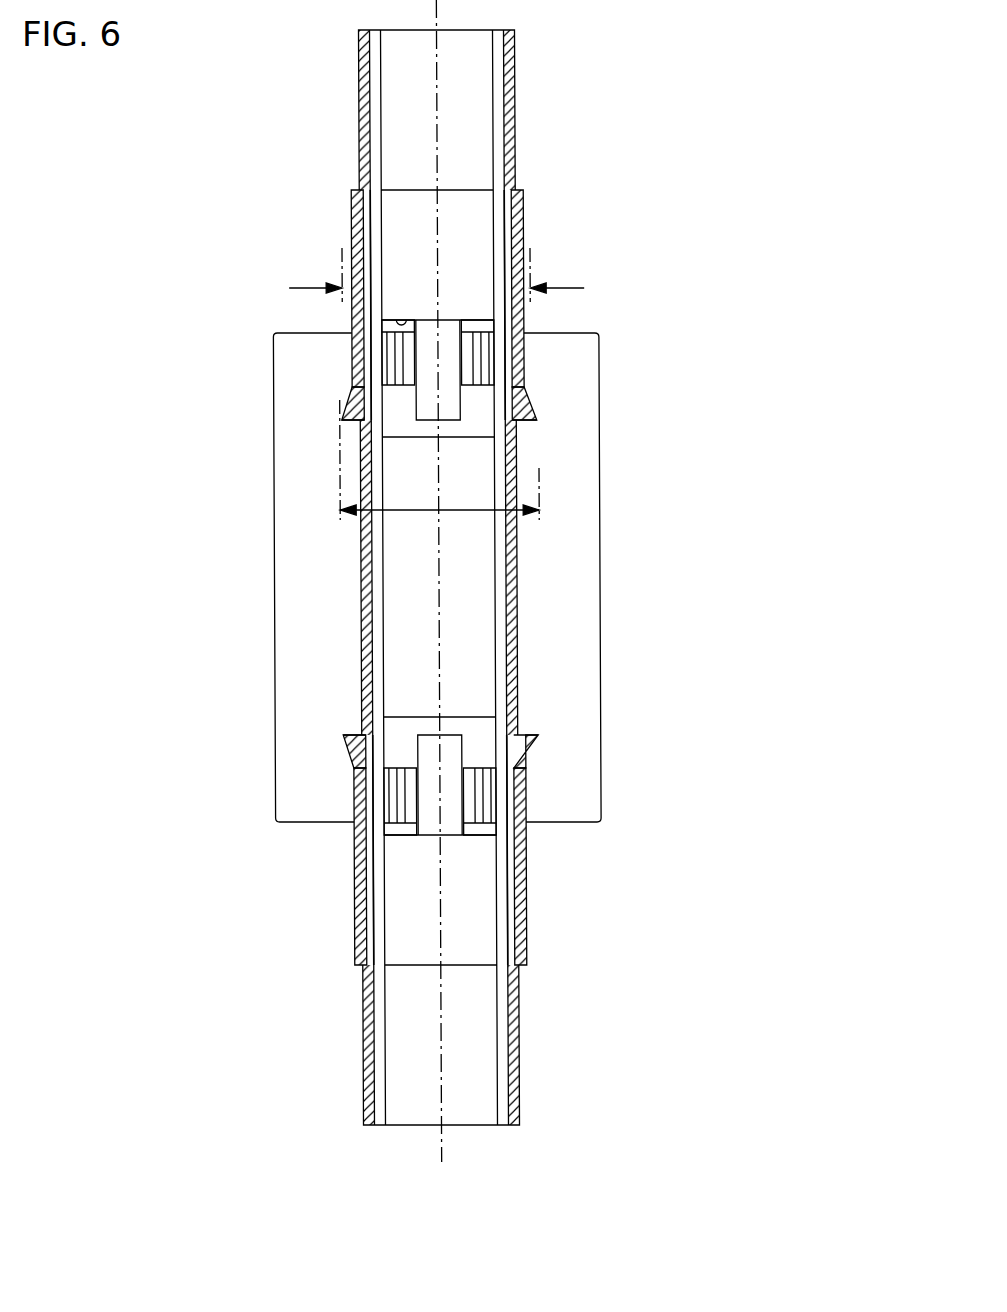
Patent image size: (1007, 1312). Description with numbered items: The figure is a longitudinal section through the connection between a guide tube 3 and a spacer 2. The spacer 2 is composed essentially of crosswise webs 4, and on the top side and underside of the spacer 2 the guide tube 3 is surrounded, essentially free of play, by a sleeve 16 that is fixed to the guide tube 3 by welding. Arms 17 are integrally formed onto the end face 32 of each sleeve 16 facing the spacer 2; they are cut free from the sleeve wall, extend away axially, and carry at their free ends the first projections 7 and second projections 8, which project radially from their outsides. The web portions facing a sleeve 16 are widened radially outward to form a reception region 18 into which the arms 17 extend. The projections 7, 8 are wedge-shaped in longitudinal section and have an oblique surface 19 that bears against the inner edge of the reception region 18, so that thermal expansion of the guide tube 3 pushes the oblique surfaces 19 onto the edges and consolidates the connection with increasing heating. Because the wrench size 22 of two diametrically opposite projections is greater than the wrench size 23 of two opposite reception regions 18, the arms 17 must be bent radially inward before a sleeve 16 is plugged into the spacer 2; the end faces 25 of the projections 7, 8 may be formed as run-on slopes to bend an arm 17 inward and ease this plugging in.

The spacer 2 is at (555, 577).
The guide tube 3 is at (514, 70).
The web 4 is at (600, 511).
The first projection 7 is at (548, 404).
The second projection 8 is at (545, 728).
The sleeve 16 is at (462, 243).
The arm 17 is at (524, 340).
The reception region 18 is at (470, 357).
The oblique surface 19 is at (527, 360).
The wrench size 22 is at (457, 510).
The wrench size 23 is at (565, 287).
The end face 25 is at (536, 420).
The end face 32 is at (407, 320).